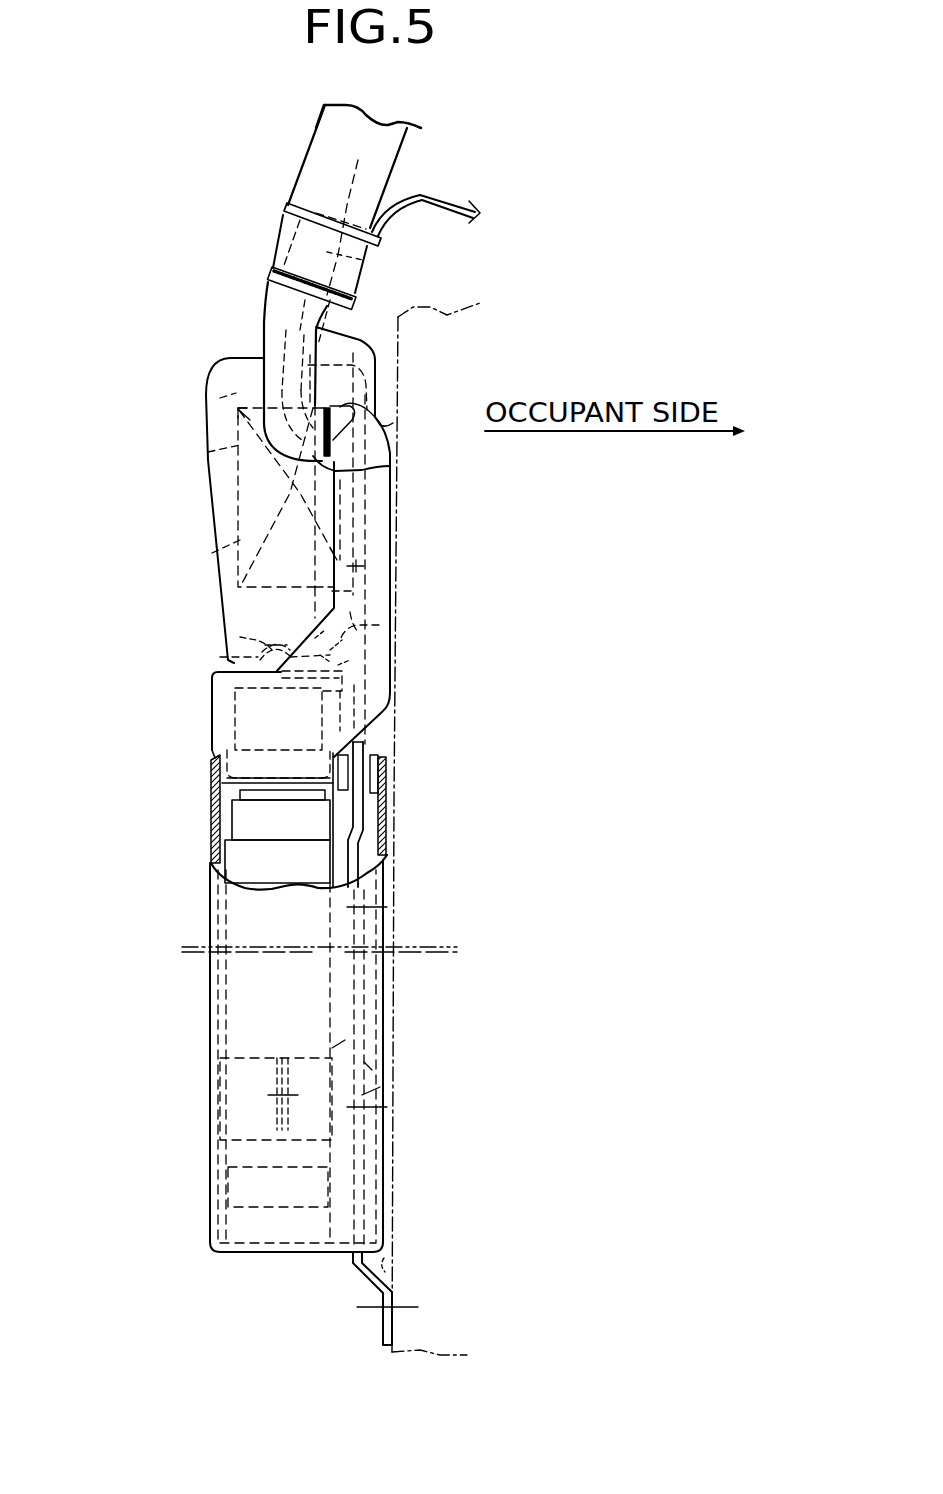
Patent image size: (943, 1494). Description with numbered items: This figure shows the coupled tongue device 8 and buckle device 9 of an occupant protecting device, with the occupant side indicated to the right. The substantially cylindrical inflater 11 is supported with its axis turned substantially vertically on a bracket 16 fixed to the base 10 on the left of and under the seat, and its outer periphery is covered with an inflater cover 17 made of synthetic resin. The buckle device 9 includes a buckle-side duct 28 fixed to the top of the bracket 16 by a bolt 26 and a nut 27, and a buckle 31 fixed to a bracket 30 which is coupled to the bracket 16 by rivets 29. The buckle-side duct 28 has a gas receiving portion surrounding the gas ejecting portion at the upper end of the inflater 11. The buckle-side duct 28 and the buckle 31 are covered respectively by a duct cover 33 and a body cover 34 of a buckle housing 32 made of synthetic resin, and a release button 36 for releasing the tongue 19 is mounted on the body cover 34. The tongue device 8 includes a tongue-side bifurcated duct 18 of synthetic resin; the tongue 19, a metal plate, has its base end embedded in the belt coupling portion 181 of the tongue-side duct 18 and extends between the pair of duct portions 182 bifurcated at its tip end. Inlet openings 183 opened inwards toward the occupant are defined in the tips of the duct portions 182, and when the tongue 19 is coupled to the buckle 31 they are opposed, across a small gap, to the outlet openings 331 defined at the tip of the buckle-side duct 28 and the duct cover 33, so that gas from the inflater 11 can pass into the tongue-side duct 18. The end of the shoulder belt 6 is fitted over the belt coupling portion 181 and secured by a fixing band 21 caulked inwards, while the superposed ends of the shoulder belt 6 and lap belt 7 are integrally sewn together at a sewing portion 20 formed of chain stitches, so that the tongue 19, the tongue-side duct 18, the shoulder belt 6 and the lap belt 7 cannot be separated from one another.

The shoulder belt 6 is at (300, 155).
The belt coupling portion 181 is at (340, 236).
The lap belt 7 is at (445, 197).
The fixing band 21 is at (286, 230).
The sewing portion 20 is at (273, 276).
The tongue-side bifurcated duct 18 is at (261, 310).
The tongue device 8 is at (376, 293).
The duct portions 182 is at (263, 373).
The release button 36 is at (220, 395).
The inlet openings 183 is at (393, 423).
The buckle housing 32 is at (192, 478).
The buckle device 9 is at (190, 523).
The tongue 19 is at (274, 507).
The outlet openings 331 is at (390, 466).
The duct cover 33 is at (380, 523).
The buckle-side duct 28 is at (398, 572).
The buckle 31 is at (212, 556).
The body cover 34 is at (220, 577).
The bolt 26 is at (284, 681).
The bracket 30 is at (392, 623).
The nut 27 is at (233, 652).
The rivets 29 is at (370, 777).
The inflater 11 is at (226, 821).
The bracket 16 is at (347, 827).
The inflater cover 17 is at (209, 920).
The base 10 is at (392, 1270).